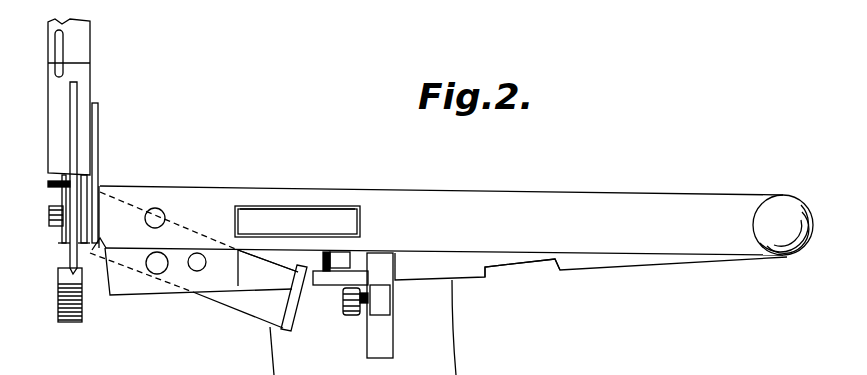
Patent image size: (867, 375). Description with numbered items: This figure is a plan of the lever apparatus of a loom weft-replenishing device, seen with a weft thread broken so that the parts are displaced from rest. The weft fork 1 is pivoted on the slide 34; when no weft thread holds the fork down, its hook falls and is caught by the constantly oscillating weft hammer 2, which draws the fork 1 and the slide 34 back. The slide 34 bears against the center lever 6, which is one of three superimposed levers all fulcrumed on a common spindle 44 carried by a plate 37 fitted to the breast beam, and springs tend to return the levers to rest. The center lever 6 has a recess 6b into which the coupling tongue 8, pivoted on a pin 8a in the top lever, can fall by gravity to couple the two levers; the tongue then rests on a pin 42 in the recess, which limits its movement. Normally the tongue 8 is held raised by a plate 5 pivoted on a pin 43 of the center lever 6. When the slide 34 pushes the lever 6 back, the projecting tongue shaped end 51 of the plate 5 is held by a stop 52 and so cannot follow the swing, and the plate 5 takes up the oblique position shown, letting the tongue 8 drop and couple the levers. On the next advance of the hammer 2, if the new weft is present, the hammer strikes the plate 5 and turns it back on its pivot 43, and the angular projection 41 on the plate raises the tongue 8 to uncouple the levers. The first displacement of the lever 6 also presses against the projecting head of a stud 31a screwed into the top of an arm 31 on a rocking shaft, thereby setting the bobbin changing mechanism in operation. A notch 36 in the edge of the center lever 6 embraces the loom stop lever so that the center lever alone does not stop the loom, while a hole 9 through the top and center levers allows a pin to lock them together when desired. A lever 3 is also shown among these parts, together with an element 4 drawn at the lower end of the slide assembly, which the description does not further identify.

The weft fork 1 is at (58, 38).
The weft hammer 2 is at (50, 103).
The lever 3 is at (74, 100).
The weight block 4 is at (63, 300).
The plate 5 is at (259, 316).
The center lever 6 is at (105, 293).
The recess 6b is at (248, 265).
The coupling tongue 8 is at (248, 218).
The pin 8a is at (347, 206).
The hole 9 is at (150, 221).
The arm 31 is at (386, 303).
The stud 31a is at (350, 313).
The slide 34 is at (98, 152).
The notch 36 is at (513, 270).
The plate 37 is at (454, 352).
The angular projection 41 is at (293, 320).
The pin 42 is at (320, 285).
The pin 43 is at (198, 271).
The spindle 44 is at (786, 217).
The tongue shaped end 51 is at (57, 183).
The stop 52 is at (62, 203).